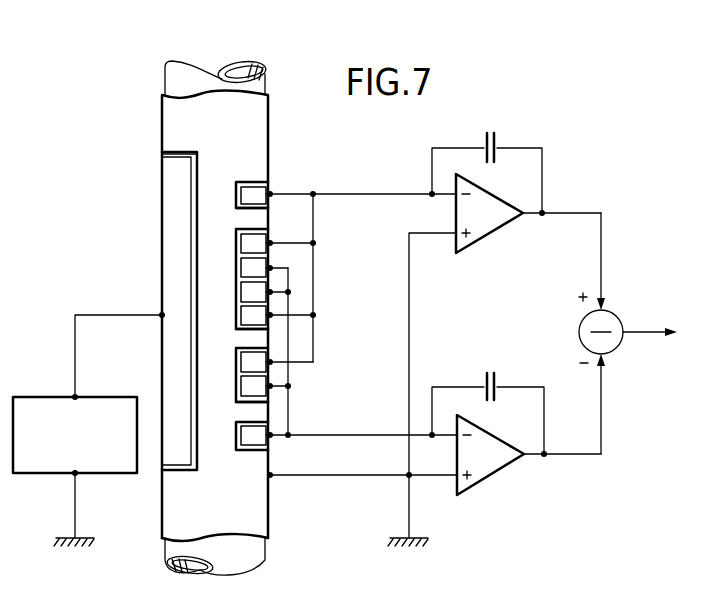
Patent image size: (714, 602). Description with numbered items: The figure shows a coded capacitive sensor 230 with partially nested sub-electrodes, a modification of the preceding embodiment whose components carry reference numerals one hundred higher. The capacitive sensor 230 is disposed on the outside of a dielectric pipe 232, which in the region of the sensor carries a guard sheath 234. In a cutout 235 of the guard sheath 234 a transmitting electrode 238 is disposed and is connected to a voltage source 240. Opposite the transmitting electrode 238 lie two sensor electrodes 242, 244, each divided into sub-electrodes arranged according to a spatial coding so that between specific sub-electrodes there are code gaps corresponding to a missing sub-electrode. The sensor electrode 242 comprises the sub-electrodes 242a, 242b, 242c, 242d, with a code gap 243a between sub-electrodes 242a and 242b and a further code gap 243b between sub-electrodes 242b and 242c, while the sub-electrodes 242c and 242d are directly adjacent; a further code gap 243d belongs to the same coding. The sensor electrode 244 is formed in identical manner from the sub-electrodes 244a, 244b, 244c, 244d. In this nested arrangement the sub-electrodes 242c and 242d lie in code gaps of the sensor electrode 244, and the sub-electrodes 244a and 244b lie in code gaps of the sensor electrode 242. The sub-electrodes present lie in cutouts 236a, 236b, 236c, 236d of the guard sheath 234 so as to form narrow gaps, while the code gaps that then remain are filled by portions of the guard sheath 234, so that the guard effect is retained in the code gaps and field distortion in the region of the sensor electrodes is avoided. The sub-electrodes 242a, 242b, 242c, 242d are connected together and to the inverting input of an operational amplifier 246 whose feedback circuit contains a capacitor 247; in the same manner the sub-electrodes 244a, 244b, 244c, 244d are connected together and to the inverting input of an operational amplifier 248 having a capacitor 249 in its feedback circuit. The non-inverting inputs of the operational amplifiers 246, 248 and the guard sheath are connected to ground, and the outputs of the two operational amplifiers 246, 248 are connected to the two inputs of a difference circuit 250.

The capacitive sensor 230 is at (145, 228).
The dielectric pipe 232 is at (263, 77).
The guard sheath 234 is at (163, 126).
The cutout 235 is at (187, 152).
The cutout 236a is at (286, 179).
The cutout 236b is at (285, 275).
The cutout 236c is at (246, 366).
The cutout 236d is at (281, 444).
The transmitting electrode 238 is at (163, 276).
The voltage source 240 is at (40, 403).
The sensor electrode 242 is at (283, 170).
The sub-electrode 242a is at (271, 193).
The sub-electrode 242b is at (272, 242).
The sub-electrode 242c is at (270, 311).
The sub-electrode 242d is at (272, 360).
The code gap 243a is at (270, 214).
The code gap 243b is at (270, 336).
The code gap 243d is at (270, 406).
The sensor electrode 244 is at (292, 463).
The sub-electrode 244a is at (270, 258).
The sub-electrode 244b is at (270, 286).
The sub-electrode 244c is at (272, 383).
The sub-electrode 244d is at (262, 440).
The operational amplifier 246 is at (478, 228).
The capacitor 247 is at (496, 140).
The operational amplifier 248 is at (492, 463).
The capacitor 249 is at (496, 380).
The difference circuit 250 is at (610, 320).